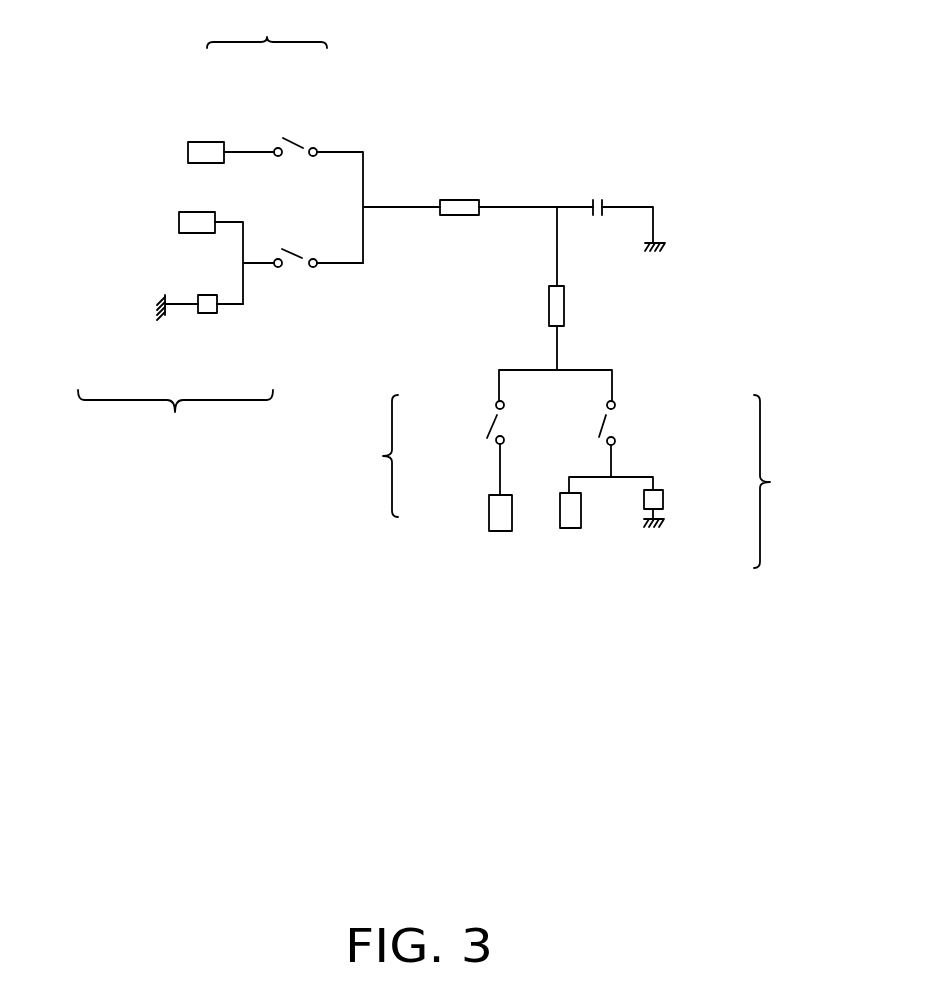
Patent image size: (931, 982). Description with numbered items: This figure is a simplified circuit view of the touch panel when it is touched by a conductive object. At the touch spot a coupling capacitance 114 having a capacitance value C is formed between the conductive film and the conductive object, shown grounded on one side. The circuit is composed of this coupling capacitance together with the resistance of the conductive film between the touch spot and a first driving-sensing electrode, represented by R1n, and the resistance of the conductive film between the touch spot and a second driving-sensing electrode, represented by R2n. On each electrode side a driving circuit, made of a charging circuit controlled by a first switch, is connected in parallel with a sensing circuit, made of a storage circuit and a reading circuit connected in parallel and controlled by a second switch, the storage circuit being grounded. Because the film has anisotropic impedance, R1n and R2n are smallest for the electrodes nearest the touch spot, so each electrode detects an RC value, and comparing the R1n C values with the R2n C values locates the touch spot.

The coupling capacitance 114 is at (598, 198).
The resistance of the conductive film between the touch spot and the first driving-s R1n is at (457, 191).
The resistance of the conductive film between the touch spot and the second driving- R2n is at (579, 306).